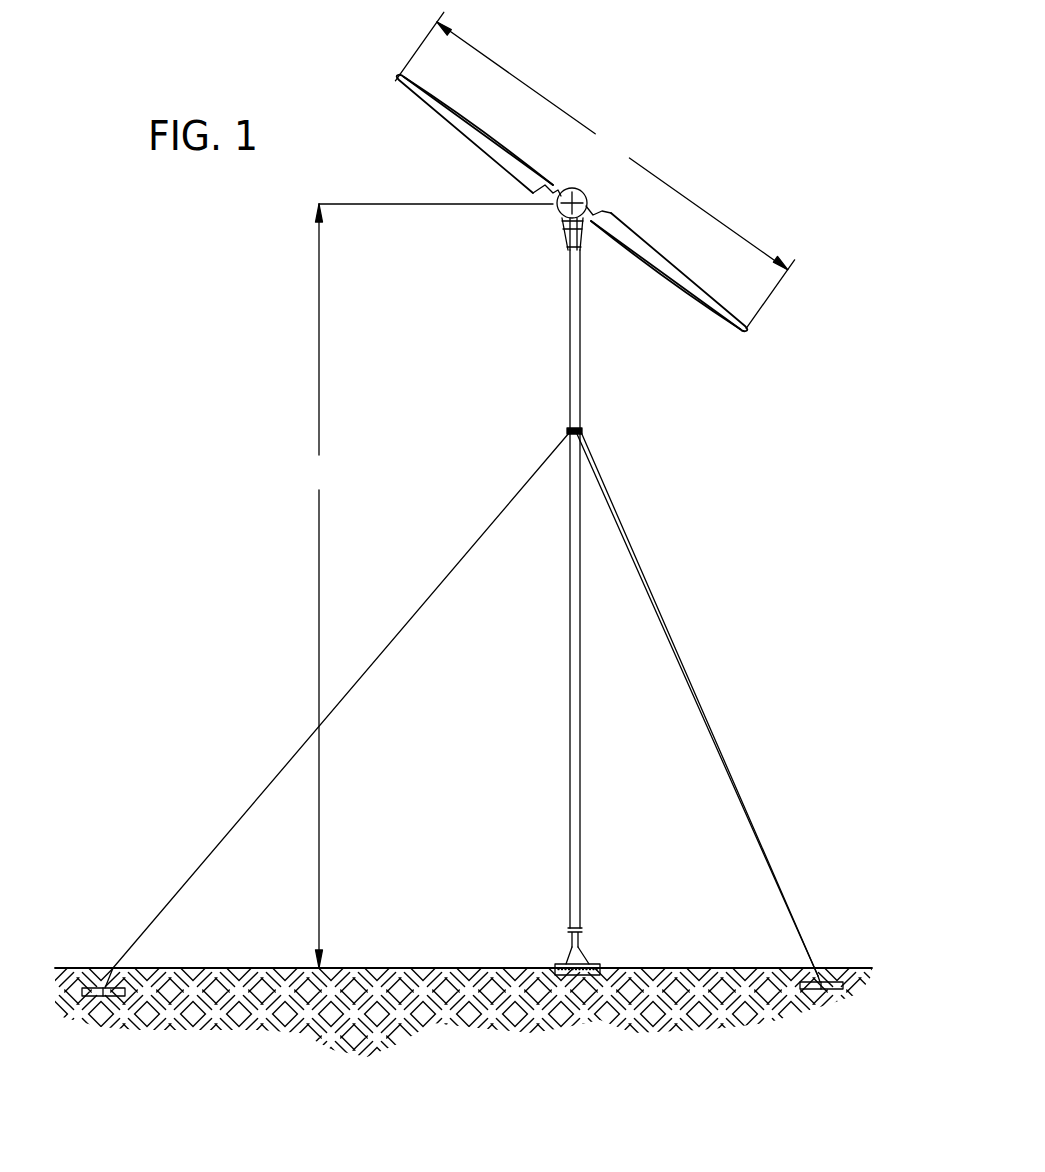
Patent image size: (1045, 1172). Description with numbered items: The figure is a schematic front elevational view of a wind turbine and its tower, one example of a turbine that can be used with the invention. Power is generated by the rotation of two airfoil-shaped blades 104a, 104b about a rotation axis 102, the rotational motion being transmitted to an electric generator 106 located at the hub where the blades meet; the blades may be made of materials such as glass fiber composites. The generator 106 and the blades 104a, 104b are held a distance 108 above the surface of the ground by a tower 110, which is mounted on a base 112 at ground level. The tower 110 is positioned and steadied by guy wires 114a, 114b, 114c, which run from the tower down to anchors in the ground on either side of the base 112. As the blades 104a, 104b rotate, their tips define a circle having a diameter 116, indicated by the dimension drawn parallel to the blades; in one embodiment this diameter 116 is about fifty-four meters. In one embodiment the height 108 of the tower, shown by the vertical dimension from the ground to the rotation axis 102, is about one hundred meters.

The rotation axis 102 is at (563, 218).
The airfoil-shaped blade 104a is at (695, 303).
The airfoil-shaped blade 104b is at (432, 100).
The generator 106 is at (588, 197).
The distance above the ground 108 is at (427, 586).
The tower 110 is at (580, 688).
The base 112 is at (588, 962).
The guy wire 114a is at (338, 705).
The guy wire 114b is at (648, 597).
The guy wire 114c is at (633, 550).
The diameter 116 is at (594, 170).